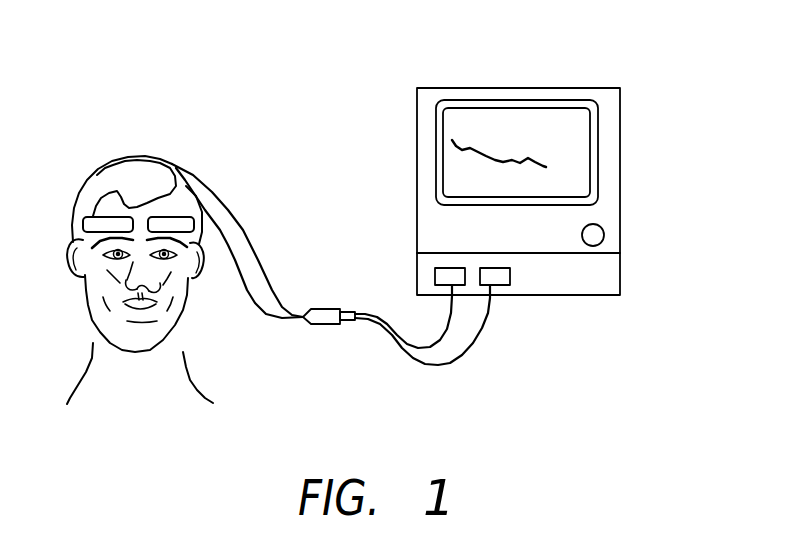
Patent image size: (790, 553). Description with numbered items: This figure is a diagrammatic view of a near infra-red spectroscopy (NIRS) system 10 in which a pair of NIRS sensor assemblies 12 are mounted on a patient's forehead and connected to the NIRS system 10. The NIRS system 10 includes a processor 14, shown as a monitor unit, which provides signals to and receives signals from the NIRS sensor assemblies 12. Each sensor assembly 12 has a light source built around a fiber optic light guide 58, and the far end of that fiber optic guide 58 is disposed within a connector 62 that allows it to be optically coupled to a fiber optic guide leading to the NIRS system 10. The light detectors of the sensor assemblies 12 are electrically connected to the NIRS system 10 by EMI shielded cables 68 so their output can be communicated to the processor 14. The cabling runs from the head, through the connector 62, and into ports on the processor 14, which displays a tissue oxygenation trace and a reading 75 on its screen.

The near infra-red spectroscopy (NIRS) system 10 is at (237, 88).
The NIRS sensor assembly 12 is at (160, 216).
The processor 14 is at (558, 173).
The fiber optic light guide 58 is at (240, 220).
The EMI shielded cable 68 is at (452, 320).
The connector 62 is at (317, 324).
The oxygen saturation value 75 is at (511, 160).